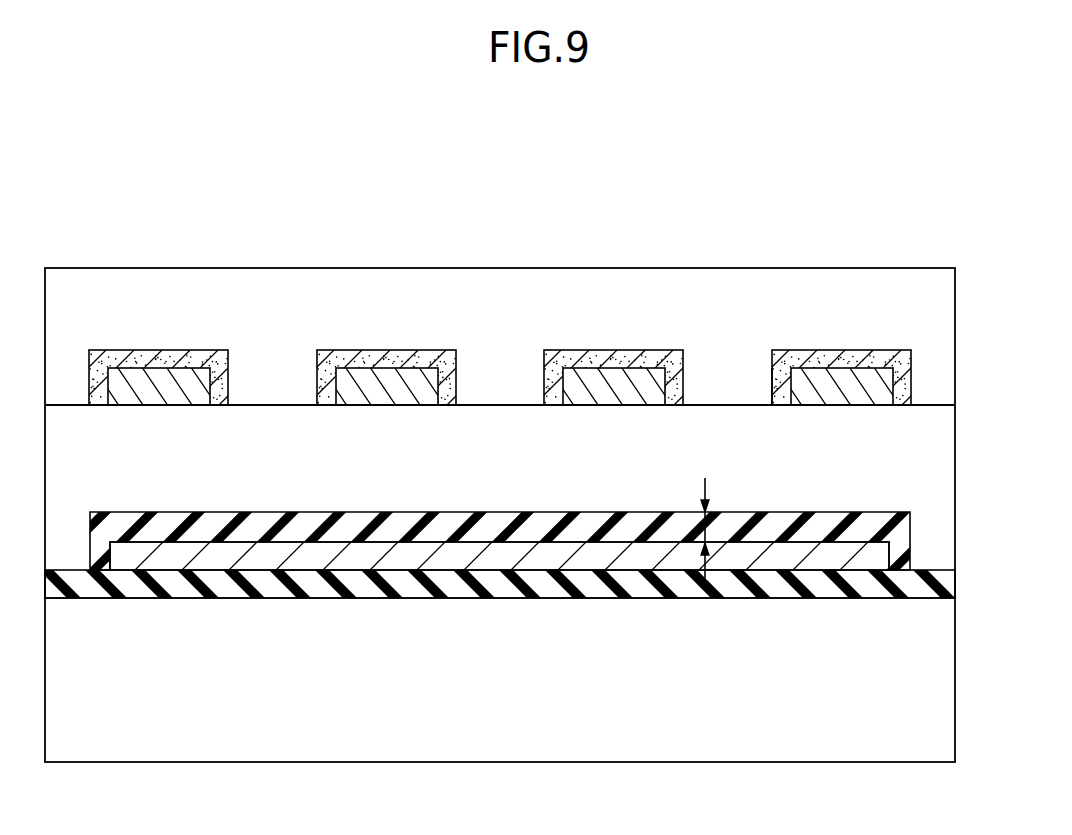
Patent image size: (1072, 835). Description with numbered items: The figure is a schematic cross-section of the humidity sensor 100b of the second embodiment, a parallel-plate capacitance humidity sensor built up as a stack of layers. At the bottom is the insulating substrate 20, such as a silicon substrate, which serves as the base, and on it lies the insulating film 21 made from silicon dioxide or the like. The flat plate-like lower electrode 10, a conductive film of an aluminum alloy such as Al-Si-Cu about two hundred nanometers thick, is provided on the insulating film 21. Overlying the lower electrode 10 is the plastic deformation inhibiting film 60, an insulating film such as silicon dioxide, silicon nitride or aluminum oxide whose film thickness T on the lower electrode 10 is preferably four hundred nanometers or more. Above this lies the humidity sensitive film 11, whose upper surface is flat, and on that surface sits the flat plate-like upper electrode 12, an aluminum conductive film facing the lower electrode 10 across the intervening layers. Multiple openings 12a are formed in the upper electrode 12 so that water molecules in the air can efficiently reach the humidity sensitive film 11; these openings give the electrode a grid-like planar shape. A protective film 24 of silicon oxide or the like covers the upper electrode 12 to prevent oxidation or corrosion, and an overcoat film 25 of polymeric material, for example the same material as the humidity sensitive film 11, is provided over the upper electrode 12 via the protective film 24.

The humidity sensor 100b is at (100, 231).
The overcoat film 25 is at (938, 296).
The protective film 24 is at (906, 360).
The upper electrode 12 is at (886, 385).
The opening 12a is at (776, 379).
The humidity sensitive film 11 is at (938, 446).
The plastic deformation inhibiting film 60 is at (900, 527).
The lower electrode 10 is at (881, 556).
The insulating film 21 is at (942, 583).
The insulating substrate 20 is at (938, 680).
The film thickness T is at (702, 530).